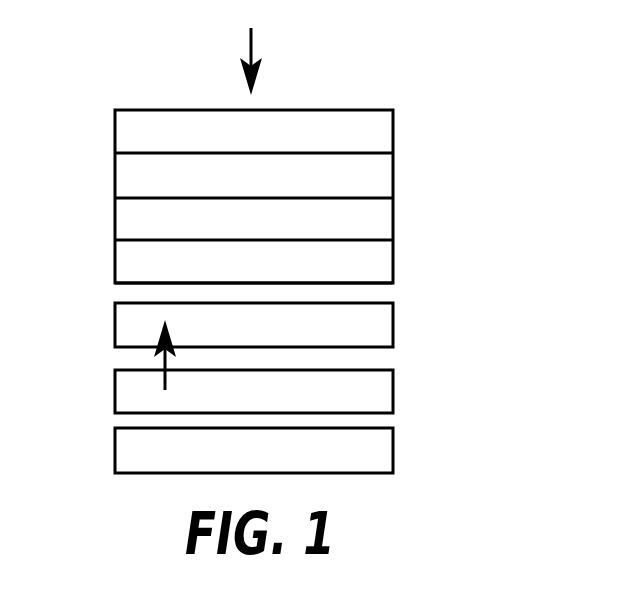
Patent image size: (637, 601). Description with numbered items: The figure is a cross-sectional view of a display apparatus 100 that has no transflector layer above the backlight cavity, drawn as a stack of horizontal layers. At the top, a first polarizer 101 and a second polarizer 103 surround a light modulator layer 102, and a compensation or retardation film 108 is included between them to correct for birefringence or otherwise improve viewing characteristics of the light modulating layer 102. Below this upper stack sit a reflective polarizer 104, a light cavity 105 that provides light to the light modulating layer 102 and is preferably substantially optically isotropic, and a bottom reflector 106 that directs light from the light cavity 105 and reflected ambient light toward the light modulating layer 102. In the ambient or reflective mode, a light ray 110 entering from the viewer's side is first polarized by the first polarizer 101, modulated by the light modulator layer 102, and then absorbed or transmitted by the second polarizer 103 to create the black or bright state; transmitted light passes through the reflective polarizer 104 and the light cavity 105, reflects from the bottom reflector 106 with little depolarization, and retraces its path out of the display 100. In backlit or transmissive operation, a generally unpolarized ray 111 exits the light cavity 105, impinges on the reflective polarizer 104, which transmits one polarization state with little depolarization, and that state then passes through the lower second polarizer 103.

The display apparatus 100 is at (155, 73).
The first polarizer 101 is at (393, 133).
The compensation or retardation film 108 is at (393, 175).
The light modulator layer 102 is at (393, 215).
The second polarizer 103 is at (393, 257).
The reflective polarizer 104 is at (395, 325).
The light cavity 105 is at (395, 390).
The bottom reflector 106 is at (395, 447).
The light ray 110 is at (252, 40).
The ray 111 is at (160, 358).